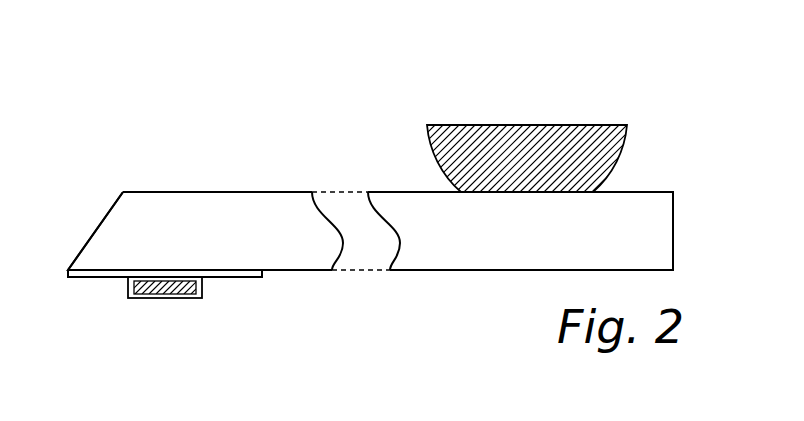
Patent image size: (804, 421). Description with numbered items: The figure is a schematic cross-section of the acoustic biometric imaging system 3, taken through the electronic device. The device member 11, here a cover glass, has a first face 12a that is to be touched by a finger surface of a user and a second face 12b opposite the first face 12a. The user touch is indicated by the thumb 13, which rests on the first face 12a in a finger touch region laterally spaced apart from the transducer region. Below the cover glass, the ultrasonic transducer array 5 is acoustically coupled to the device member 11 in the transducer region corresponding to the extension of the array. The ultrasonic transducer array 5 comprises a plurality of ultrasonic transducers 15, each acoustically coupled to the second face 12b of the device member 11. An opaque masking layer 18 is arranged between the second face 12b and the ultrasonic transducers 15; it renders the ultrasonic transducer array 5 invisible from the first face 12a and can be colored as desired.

The acoustic biometric imaging system 3 is at (245, 168).
The device member 11 is at (112, 227).
The first face 12a is at (160, 192).
The second face 12b is at (320, 270).
The thumb 13 is at (448, 99).
The ultrasonic transducers 15 is at (155, 312).
The opaque masking layer 18 is at (263, 277).
The ultrasonic transducer array 5 is at (220, 293).